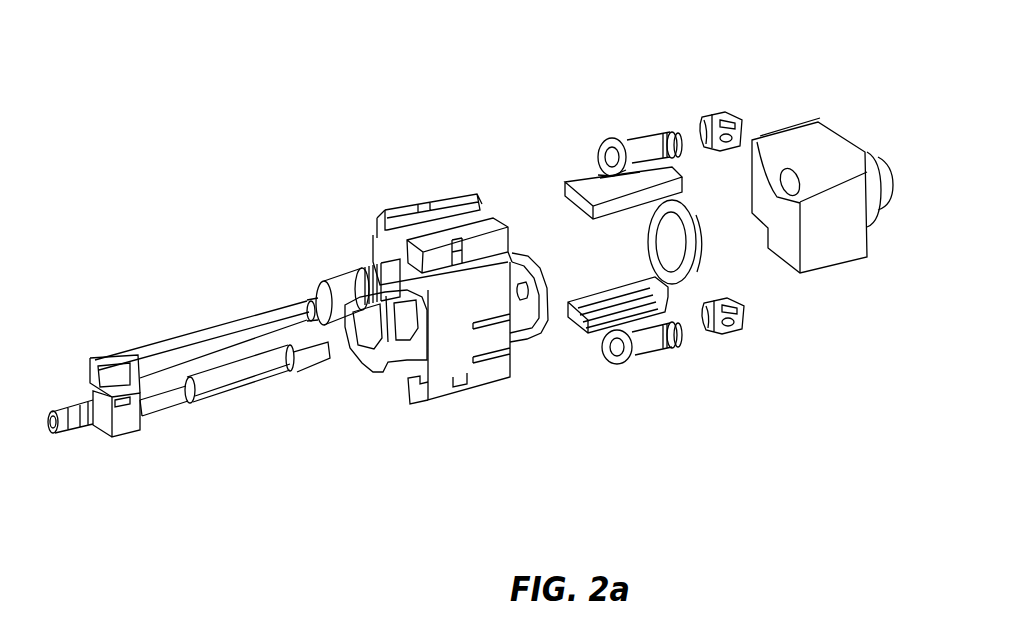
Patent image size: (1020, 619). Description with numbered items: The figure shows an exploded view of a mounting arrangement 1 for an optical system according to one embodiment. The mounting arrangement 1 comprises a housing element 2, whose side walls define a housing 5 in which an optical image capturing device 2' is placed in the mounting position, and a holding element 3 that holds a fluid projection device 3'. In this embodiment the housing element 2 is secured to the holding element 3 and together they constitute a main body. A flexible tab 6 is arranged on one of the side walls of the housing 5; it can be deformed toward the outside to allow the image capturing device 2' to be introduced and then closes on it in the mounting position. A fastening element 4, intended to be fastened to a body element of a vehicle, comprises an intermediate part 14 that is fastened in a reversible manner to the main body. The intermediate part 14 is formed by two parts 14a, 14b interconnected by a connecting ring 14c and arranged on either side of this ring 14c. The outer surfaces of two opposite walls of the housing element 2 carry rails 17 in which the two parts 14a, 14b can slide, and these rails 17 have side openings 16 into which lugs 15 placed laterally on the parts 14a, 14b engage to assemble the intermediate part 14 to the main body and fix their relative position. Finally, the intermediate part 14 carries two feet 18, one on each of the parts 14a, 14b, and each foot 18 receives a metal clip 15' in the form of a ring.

The mounting arrangement 1 is at (717, 67).
The housing element 2 is at (400, 271).
The image capturing device 2' is at (822, 233).
The holding element 3 is at (305, 381).
The fluid projection device 3' is at (235, 415).
The fastening element 4 is at (768, 364).
The housing 5 is at (524, 232).
The flexible tab 6 is at (487, 345).
The intermediate part 14 is at (642, 112).
The first part of the intermediate part 14a is at (585, 188).
The second part of the intermediate part 14b is at (622, 362).
The connecting ring 14c is at (700, 258).
The lugs 15 is at (603, 250).
The metal clip in the form of a ring 15' is at (768, 231).
The side openings 16 is at (455, 238).
The rails 17 is at (370, 198).
The feet 18 is at (657, 134).